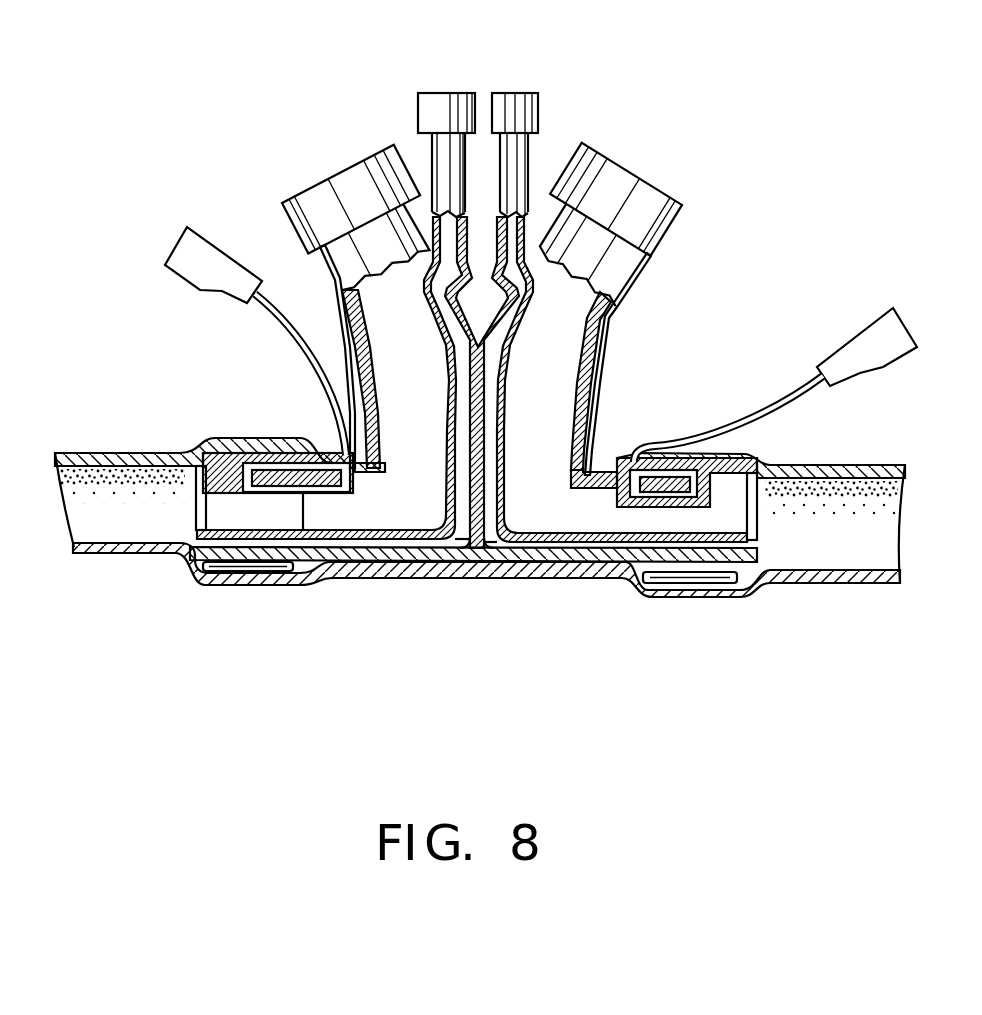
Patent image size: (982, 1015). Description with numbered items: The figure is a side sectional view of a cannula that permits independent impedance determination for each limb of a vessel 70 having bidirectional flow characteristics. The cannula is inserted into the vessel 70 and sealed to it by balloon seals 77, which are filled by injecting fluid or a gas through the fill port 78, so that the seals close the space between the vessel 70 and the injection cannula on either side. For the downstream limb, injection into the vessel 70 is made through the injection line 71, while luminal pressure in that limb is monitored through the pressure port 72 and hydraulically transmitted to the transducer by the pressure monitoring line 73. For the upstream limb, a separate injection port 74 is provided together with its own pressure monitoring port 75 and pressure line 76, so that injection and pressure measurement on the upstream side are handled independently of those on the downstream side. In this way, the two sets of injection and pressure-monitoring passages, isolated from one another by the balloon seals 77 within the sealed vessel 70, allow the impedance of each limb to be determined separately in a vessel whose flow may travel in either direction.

The vessel 70 is at (120, 560).
The injection line 71 is at (350, 177).
The pressure port 72 is at (195, 538).
The pressure monitoring line 73 is at (430, 102).
The injection port 74 is at (633, 190).
The pressure monitoring port 75 is at (752, 552).
The pressure line 76 is at (538, 107).
The balloon seals 77 is at (247, 447).
The fill port 78 is at (212, 257).